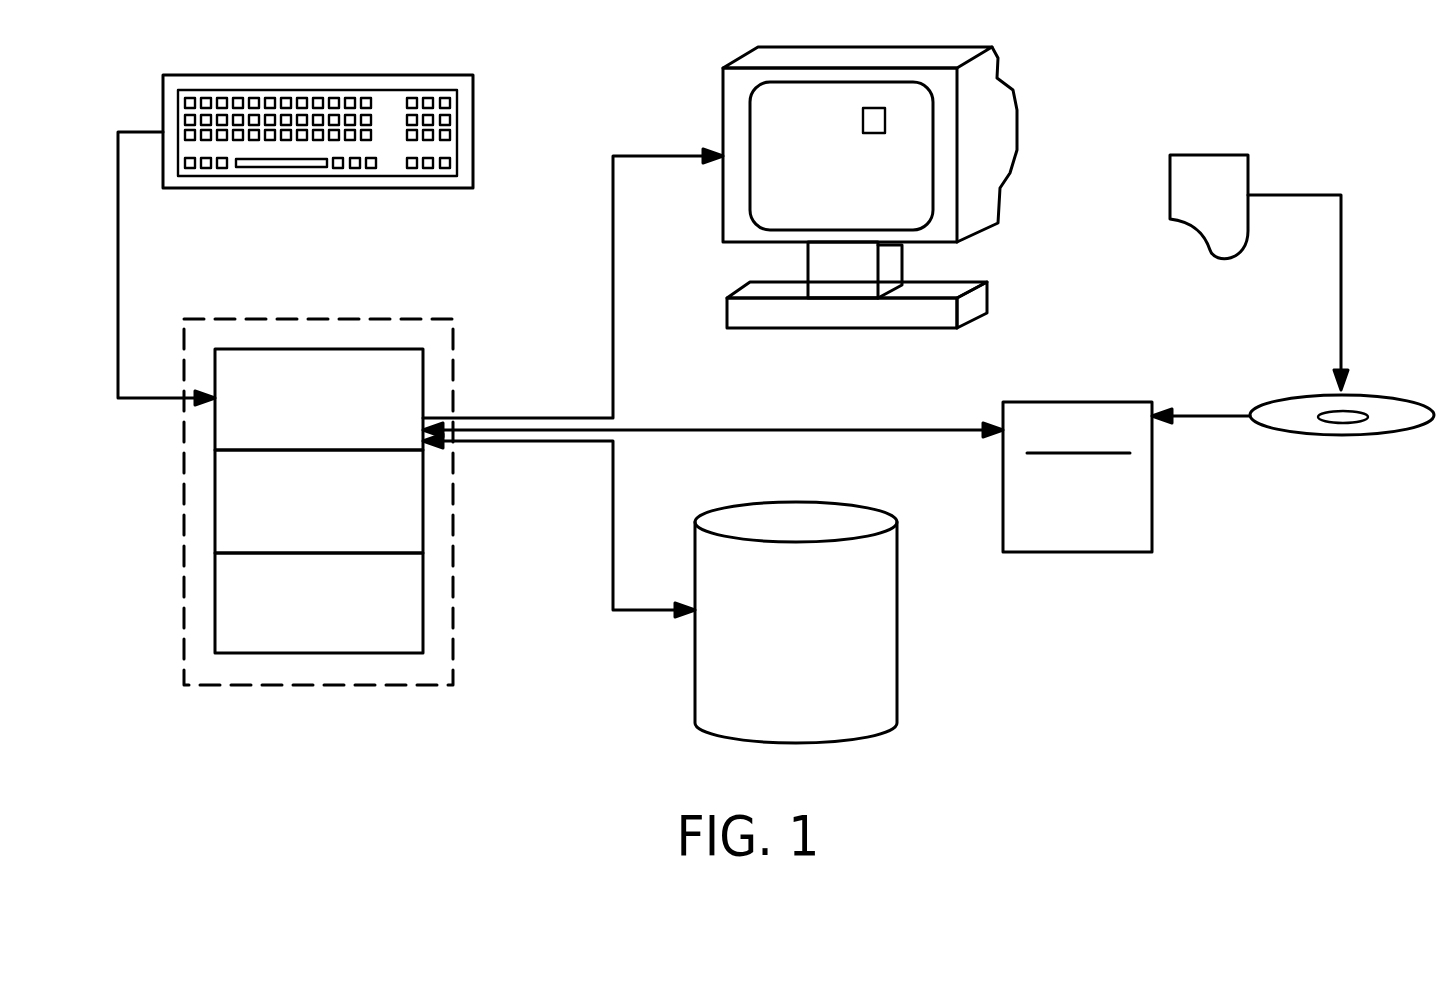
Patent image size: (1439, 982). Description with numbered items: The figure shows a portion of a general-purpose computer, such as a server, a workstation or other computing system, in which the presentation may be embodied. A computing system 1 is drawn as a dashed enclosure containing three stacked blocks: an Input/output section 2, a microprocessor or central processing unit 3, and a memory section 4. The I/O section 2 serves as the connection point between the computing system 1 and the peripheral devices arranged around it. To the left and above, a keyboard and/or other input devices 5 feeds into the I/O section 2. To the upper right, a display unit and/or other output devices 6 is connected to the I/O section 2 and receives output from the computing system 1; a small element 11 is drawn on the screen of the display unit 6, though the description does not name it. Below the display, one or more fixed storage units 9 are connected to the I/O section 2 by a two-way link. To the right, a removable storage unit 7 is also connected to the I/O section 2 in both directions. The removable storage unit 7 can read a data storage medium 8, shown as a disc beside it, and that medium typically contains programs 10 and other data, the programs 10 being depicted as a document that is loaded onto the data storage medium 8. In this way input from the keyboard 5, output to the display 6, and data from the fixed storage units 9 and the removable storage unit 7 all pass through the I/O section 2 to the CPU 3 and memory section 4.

The computing system 1 is at (388, 317).
The Input/output section 2 is at (247, 362).
The central processing unit 3 is at (403, 528).
The memory section 4 is at (403, 633).
The keyboard and/or other input devices 5 is at (473, 135).
The display unit and/or other output devices 6 is at (723, 120).
The removable storage unit 7 is at (1072, 399).
The data storage medium 8 is at (1294, 399).
The fixed storage unit 9 is at (898, 617).
The programs 10 is at (1170, 183).
The cursor on screen 11 is at (874, 108).